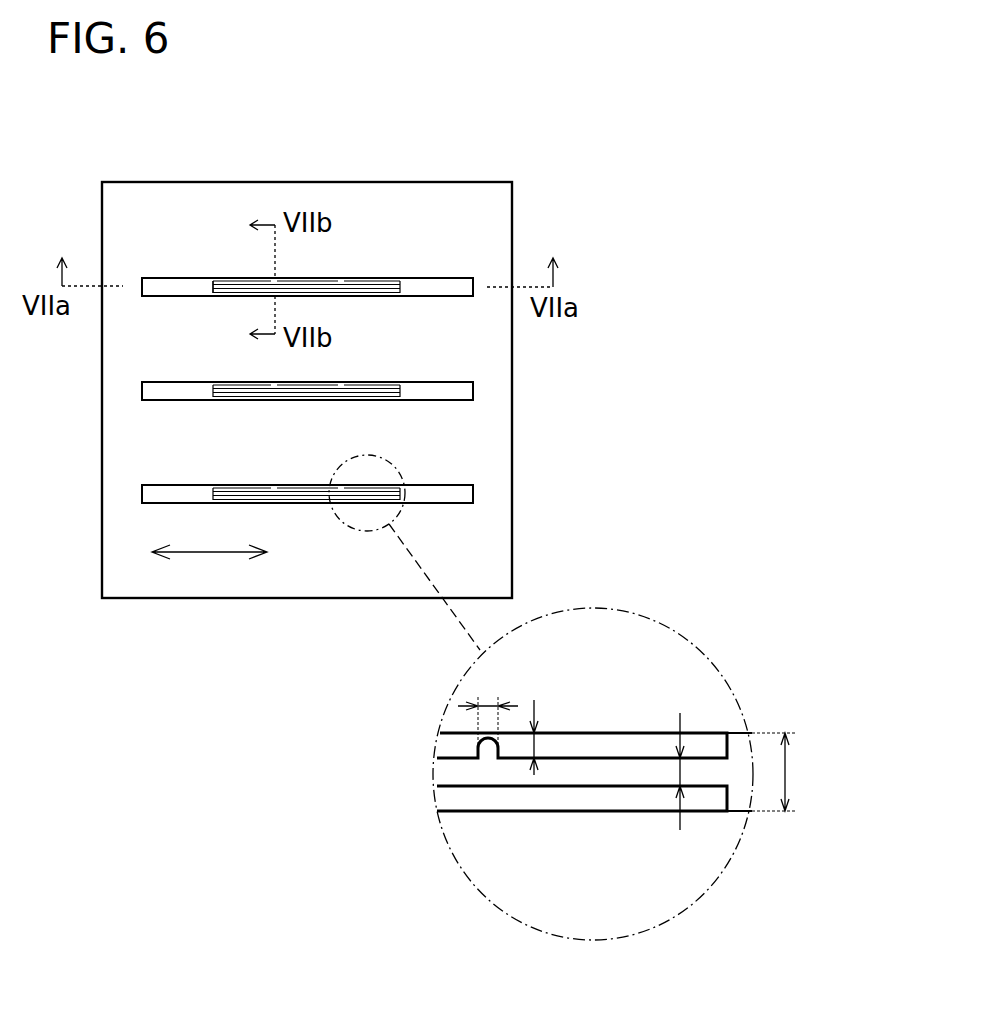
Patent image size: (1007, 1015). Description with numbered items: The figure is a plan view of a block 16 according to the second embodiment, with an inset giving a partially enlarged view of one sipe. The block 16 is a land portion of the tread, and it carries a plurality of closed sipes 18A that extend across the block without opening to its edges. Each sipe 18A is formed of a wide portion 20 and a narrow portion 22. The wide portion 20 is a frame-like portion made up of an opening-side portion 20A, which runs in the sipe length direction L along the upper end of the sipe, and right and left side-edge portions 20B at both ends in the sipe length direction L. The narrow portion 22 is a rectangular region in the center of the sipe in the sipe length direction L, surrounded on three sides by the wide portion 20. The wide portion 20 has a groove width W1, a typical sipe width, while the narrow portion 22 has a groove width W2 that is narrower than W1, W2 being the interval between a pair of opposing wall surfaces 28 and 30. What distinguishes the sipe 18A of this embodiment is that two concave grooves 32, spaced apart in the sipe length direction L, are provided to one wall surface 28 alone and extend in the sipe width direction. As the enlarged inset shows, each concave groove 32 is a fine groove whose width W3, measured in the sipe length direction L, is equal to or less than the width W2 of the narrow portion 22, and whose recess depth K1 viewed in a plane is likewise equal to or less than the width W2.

The block 16 is at (319, 147).
The sipe 18A is at (152, 275).
The wide portion 20 is at (447, 388).
The opening-side portion 20A is at (248, 278).
The side-edge portion 20B is at (443, 285).
The narrow portion 22 is at (363, 390).
The wall surface 28 is at (634, 766).
The wall surface 30 is at (587, 770).
The concave groove 32 is at (275, 279).
The sipe length direction L is at (209, 565).
The groove width of the wide portion W1 is at (783, 772).
The groove width of the narrow portion W2 is at (680, 773).
The width of the concave groove W3 is at (488, 703).
The recess depth of the concave groove K1 is at (500, 740).